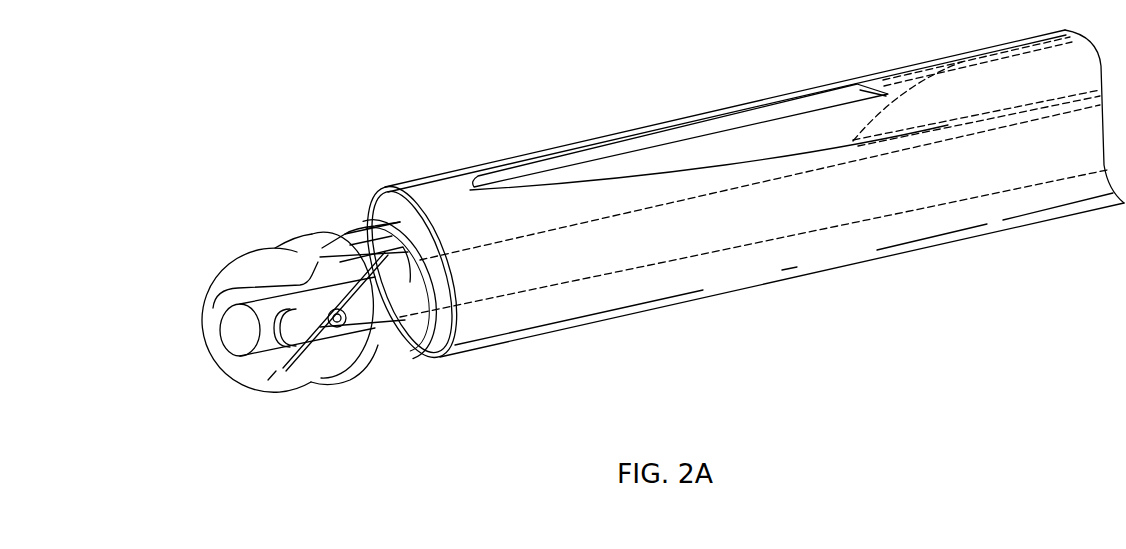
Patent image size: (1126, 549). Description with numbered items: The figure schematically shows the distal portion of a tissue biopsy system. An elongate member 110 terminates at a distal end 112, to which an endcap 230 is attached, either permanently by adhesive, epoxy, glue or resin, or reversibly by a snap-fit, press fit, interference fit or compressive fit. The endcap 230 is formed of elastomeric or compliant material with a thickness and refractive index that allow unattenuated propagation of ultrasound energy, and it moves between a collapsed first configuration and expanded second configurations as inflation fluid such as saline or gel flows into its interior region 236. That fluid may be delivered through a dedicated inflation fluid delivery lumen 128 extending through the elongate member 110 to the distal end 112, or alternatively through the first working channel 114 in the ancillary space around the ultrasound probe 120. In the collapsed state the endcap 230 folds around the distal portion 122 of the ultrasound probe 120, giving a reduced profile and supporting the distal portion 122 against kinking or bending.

The elongate member 110 is at (841, 253).
The distal end 112 is at (433, 337).
The first working channel 114 is at (985, 195).
The ultrasound probe 120 is at (403, 303).
The distal portion 122 is at (307, 267).
The inflation fluid delivery lumen 128 is at (360, 238).
The endcap 230 is at (262, 390).
The interior region 236 is at (242, 272).